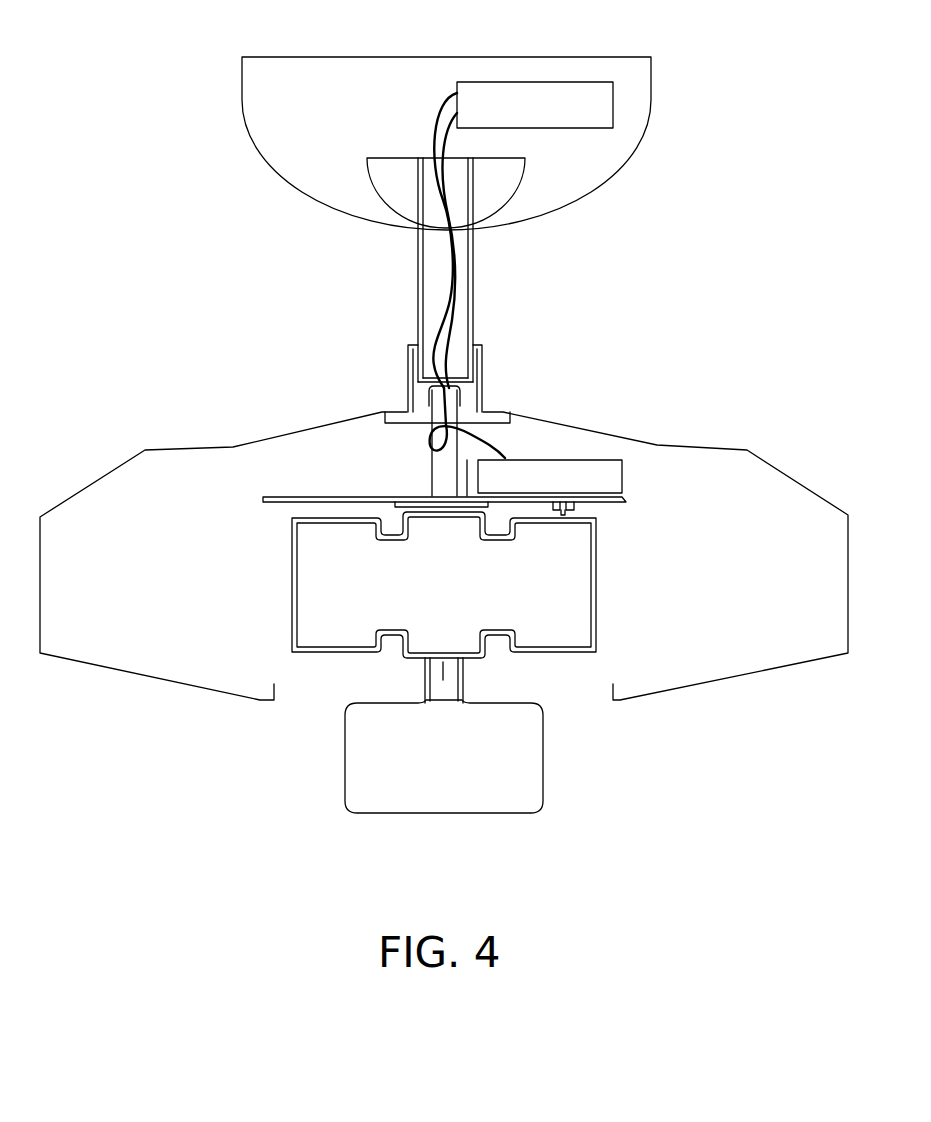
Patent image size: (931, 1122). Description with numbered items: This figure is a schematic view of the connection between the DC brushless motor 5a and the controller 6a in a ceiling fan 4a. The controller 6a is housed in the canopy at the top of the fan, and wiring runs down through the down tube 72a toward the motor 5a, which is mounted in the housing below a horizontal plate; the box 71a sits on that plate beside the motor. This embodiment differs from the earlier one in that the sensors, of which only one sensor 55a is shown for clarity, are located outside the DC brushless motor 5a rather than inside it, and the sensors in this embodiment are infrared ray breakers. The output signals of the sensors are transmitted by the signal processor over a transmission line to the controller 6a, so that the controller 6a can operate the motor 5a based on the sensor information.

The controller 6a is at (519, 110).
The down tube with wiring 72a is at (457, 298).
The ceiling fan 4a is at (530, 338).
The control box 71a is at (538, 478).
The sensor 55a is at (592, 511).
The DC brushless motor 5a is at (592, 597).